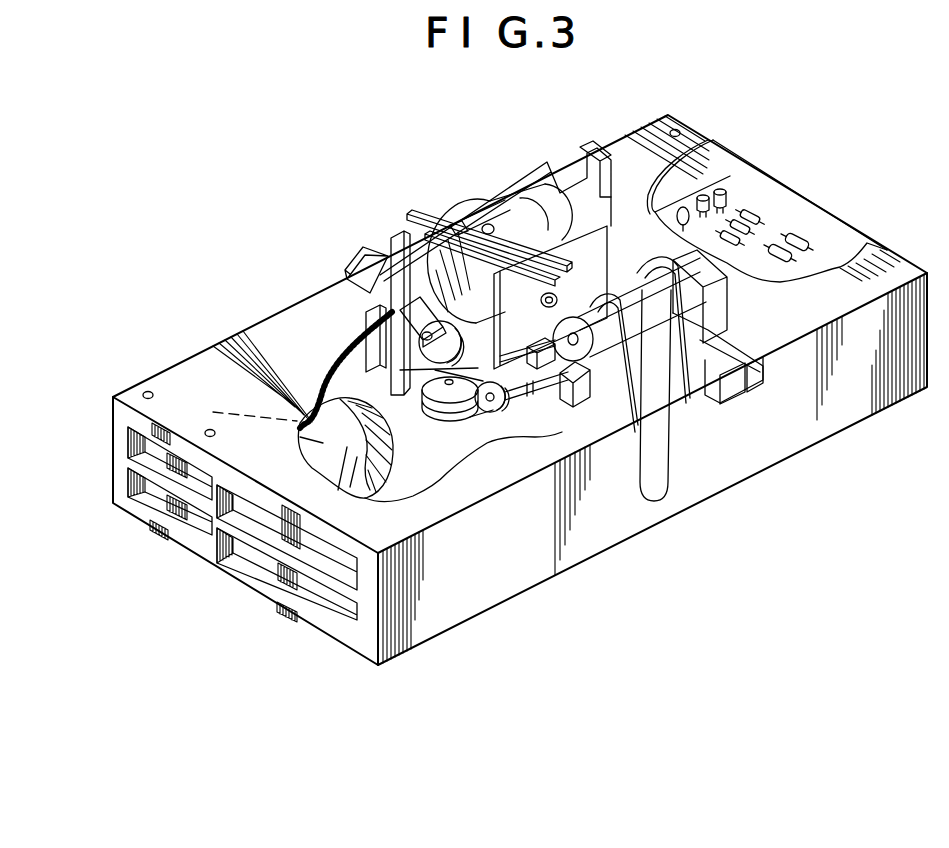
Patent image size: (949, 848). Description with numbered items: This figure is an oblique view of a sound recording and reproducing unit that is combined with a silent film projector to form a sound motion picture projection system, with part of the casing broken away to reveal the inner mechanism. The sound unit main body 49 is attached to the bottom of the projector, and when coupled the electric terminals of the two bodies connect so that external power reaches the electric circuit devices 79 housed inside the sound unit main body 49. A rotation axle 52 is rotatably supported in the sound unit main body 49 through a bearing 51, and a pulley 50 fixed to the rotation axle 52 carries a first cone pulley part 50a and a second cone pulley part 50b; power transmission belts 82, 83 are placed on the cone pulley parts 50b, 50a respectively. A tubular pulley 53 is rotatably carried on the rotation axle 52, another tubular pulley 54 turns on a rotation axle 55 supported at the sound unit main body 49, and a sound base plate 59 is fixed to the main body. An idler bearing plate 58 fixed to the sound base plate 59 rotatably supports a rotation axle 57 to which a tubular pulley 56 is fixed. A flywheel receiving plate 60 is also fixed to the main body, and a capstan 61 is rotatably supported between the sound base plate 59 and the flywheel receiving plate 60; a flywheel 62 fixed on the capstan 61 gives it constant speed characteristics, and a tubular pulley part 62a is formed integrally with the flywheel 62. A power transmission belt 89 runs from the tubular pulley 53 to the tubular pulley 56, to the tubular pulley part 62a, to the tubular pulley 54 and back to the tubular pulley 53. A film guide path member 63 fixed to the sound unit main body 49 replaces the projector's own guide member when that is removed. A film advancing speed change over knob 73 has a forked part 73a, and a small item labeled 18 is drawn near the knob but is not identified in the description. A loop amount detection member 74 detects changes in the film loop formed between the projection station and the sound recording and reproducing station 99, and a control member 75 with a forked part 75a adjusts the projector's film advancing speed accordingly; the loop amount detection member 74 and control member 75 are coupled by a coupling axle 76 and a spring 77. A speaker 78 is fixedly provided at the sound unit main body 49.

The terminal tag 18 is at (740, 390).
The sound unit main body 49 is at (733, 473).
The pulley 50 is at (664, 315).
The first cone pulley part 50a is at (675, 345).
The second cone pulley part 50b is at (620, 393).
The bearing 51 is at (568, 398).
The rotation axle 52 is at (550, 388).
The tubular pulley 53 is at (510, 404).
The tubular pulley 54 is at (440, 397).
The rotation axle 55 is at (450, 386).
The tubular pulley 56 is at (415, 360).
The rotation axle 57 is at (400, 340).
The idler bearing plate 58 is at (400, 317).
The sound base plate 59 is at (543, 162).
The flywheel receiving plate 60 is at (600, 244).
The capstan 61 is at (557, 300).
The flywheel 62 is at (500, 200).
The tubular pulley part 62a is at (530, 218).
The film guide path member 63 is at (353, 257).
The film advancing speed change over knob 73 is at (762, 384).
The forked part 73a is at (705, 276).
The loop amount detection member 74 is at (413, 209).
The control member 75 is at (523, 252).
The forked part 75a is at (562, 262).
The coupling axle 76 is at (489, 226).
The spring 77 is at (457, 227).
The speaker 78 is at (297, 435).
The electric circuit devices 79 is at (780, 227).
The power transmission belt 82 is at (663, 495).
The power transmission belt 83 is at (708, 392).
The power transmission belt 89 is at (443, 263).
The sound recording and reproducing station 99 is at (390, 208).